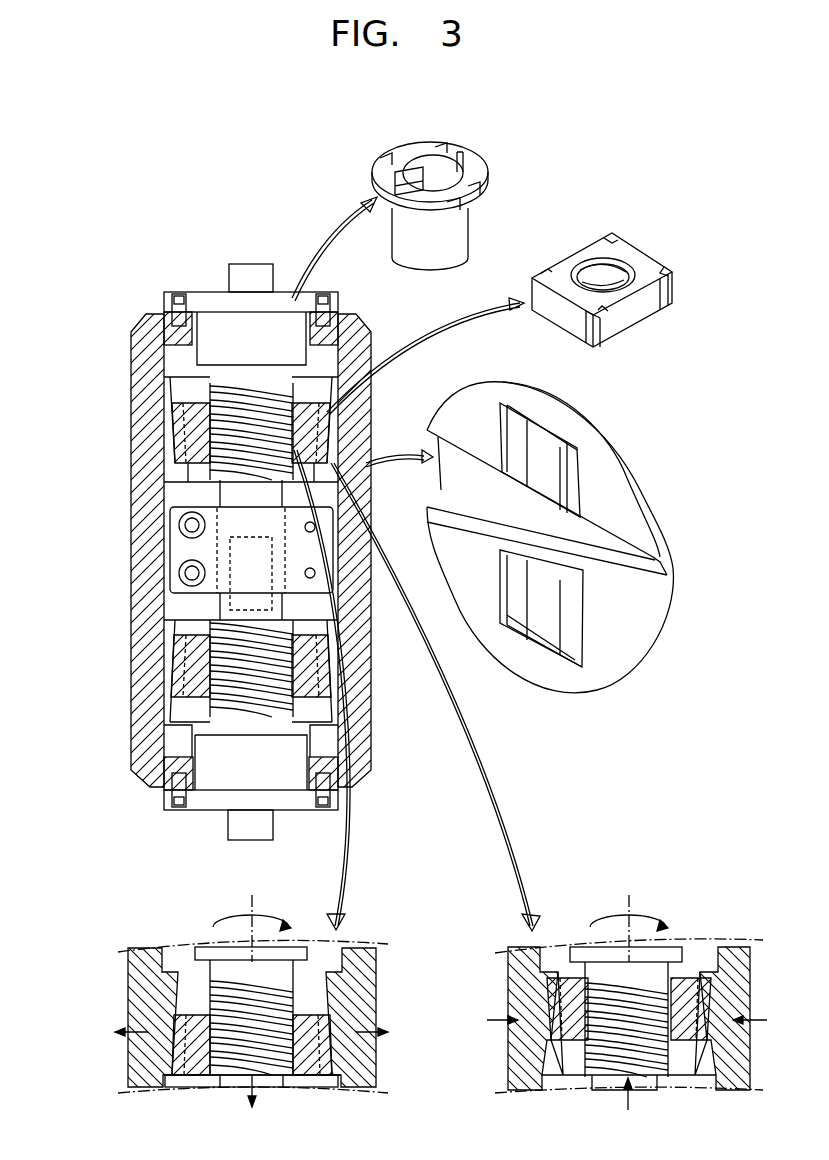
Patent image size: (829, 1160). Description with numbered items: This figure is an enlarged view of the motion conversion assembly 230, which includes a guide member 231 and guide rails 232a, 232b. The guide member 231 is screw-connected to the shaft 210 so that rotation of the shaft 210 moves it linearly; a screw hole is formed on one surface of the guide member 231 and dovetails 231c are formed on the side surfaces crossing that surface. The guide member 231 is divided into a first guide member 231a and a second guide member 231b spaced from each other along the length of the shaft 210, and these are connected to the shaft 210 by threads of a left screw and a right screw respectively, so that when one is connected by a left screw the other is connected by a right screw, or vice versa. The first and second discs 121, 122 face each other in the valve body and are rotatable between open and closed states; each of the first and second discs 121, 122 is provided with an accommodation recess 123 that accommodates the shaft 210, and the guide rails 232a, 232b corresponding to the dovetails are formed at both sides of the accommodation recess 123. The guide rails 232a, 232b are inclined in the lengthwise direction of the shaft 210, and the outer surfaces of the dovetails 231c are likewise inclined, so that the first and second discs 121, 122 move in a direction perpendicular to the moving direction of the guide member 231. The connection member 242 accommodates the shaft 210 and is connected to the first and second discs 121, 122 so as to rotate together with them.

The first disc 121 is at (149, 360).
The second disc 122 is at (368, 331).
The accommodation recess 123 is at (626, 588).
The shaft 210 is at (265, 495).
The motion conversion assembly 230 is at (124, 701).
The guide member 231 is at (664, 256).
The first guide member 231a is at (171, 432).
The second guide member 231b is at (170, 655).
The dovetails 231c is at (637, 320).
The guide rail 232a is at (547, 470).
The guide rail 232b is at (549, 604).
The connection member 242 is at (492, 162).